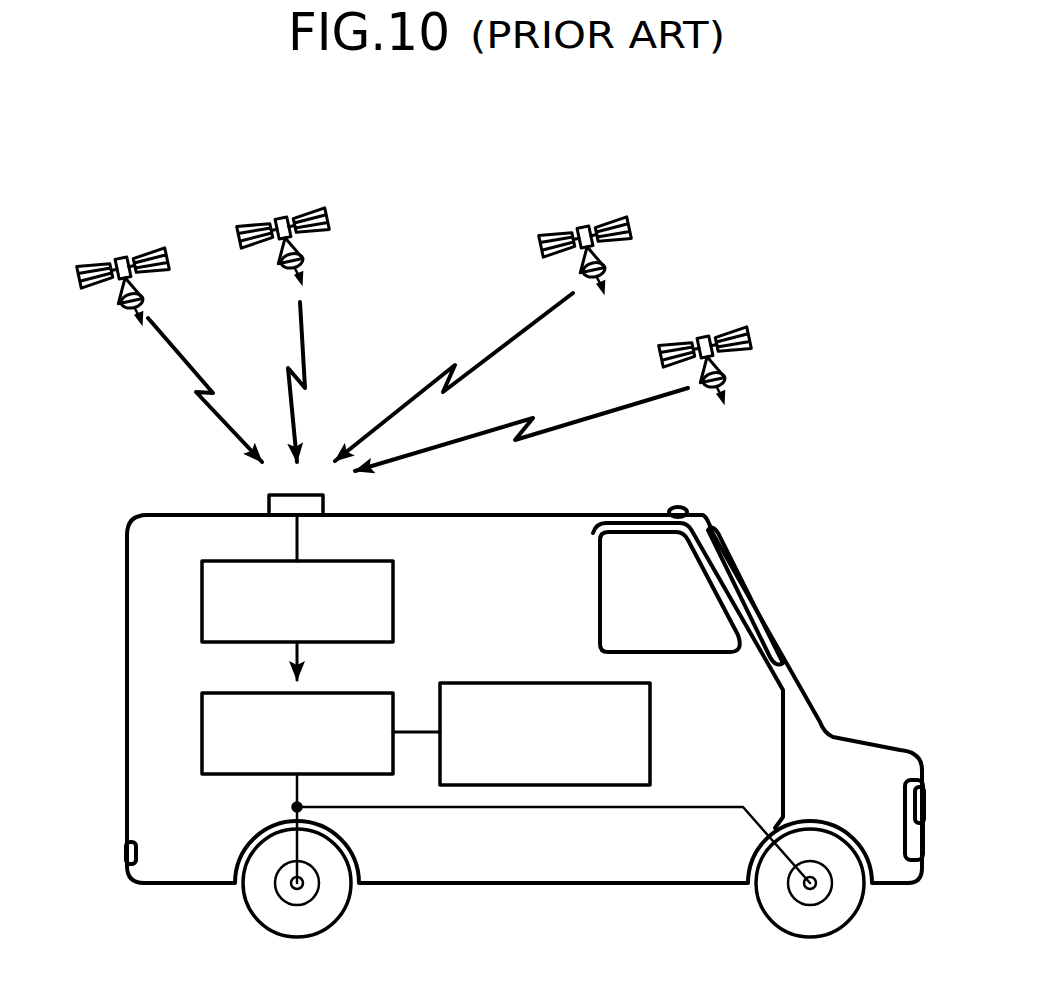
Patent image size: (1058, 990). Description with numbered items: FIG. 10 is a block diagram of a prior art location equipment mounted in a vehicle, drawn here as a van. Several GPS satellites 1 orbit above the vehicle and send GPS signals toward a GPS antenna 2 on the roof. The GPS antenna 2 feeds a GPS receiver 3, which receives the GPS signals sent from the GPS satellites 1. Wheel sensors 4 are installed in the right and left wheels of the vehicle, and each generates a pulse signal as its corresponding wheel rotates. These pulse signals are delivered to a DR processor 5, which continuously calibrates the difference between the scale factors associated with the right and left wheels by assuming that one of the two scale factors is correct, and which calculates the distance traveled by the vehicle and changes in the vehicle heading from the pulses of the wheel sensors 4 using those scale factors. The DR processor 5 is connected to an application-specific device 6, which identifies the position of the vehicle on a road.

The GPS satellites 1 is at (144, 242).
The GPS antenna 2 is at (268, 503).
The GPS receiver 3 is at (397, 597).
The wheel sensors 4 is at (317, 890).
The DR processor 5 is at (352, 693).
The application-specific device 6 is at (543, 683).